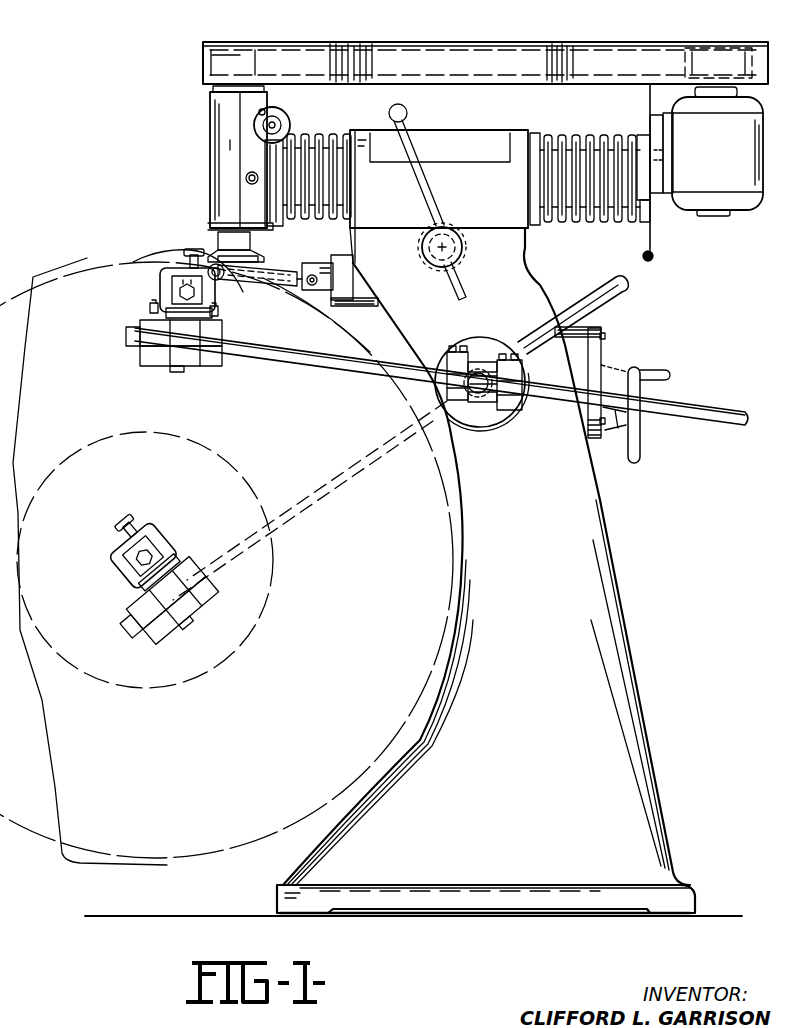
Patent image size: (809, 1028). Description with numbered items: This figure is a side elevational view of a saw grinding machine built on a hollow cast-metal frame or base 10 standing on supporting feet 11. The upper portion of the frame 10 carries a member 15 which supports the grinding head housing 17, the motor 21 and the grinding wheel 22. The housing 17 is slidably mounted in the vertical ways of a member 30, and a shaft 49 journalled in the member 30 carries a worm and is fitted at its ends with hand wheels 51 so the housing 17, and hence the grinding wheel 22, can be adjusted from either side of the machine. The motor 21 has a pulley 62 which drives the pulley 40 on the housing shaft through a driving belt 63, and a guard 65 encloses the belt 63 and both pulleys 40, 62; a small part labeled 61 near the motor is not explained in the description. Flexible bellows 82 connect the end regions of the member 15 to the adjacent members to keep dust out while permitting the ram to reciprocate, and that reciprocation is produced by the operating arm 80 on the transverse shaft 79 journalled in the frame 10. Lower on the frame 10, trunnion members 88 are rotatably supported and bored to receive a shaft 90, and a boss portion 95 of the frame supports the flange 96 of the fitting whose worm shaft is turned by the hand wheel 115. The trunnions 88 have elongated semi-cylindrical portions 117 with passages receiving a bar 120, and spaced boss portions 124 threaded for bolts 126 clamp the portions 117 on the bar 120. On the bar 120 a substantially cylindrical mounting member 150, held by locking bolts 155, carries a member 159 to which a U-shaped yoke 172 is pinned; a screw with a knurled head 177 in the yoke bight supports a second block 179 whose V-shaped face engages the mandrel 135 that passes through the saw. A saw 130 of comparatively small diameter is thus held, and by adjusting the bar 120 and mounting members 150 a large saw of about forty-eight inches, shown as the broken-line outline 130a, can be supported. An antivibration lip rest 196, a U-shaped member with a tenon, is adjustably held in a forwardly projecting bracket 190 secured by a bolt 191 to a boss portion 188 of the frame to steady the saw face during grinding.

The frame or base 10 is at (638, 637).
The supporting feet 11 is at (282, 898).
The member 15 is at (478, 165).
The grinding head housing 17 is at (215, 135).
The motor 21 is at (722, 158).
The grinding wheel 22 is at (207, 262).
The member 30 is at (282, 262).
The pulley 40 is at (248, 62).
The shaft 49 is at (275, 124).
The hand wheels 51 is at (262, 120).
The control rod 61 is at (655, 253).
The pulley 62 is at (722, 50).
The driving belt 63 is at (392, 52).
The guard 65 is at (640, 45).
The shaft 79 is at (464, 248).
The operating arm 80 is at (415, 146).
The flexible bellows 82 is at (305, 142).
The trunnion members 88 is at (494, 426).
The shaft 90 is at (478, 396).
The boss portion 95 is at (592, 336).
The flange 96 is at (603, 352).
The hand wheel 115 is at (634, 373).
The semi-cylindrical portions 117 is at (500, 362).
The bar 120 is at (680, 404).
The boss portions 124 is at (450, 354).
The bolts 126 is at (472, 362).
The saw 130 is at (147, 250).
The saw outline 130a is at (99, 258).
The mandrel 135 is at (216, 316).
The cylindrical mounting member 150 is at (205, 358).
The locking bolts 155 is at (169, 368).
The member 159 is at (155, 308).
The yoke 172 is at (215, 298).
The knurled head 177 is at (182, 258).
The second block 179 is at (183, 293).
The boss portion 188 is at (336, 306).
The bracket 190 is at (315, 270).
The bolt 191 is at (328, 306).
The lip rest 196 is at (282, 266).